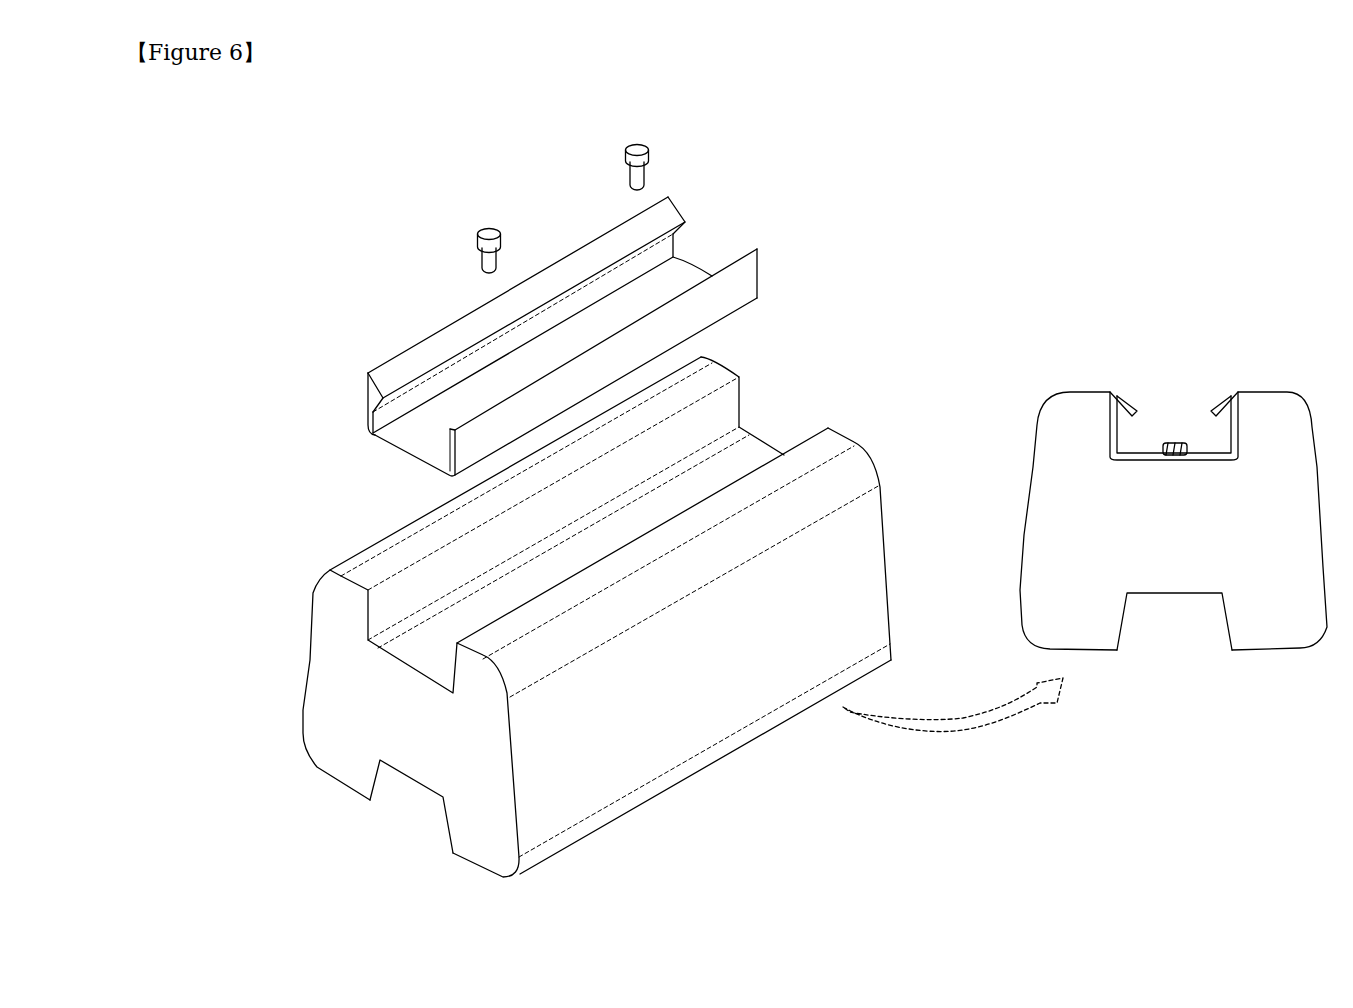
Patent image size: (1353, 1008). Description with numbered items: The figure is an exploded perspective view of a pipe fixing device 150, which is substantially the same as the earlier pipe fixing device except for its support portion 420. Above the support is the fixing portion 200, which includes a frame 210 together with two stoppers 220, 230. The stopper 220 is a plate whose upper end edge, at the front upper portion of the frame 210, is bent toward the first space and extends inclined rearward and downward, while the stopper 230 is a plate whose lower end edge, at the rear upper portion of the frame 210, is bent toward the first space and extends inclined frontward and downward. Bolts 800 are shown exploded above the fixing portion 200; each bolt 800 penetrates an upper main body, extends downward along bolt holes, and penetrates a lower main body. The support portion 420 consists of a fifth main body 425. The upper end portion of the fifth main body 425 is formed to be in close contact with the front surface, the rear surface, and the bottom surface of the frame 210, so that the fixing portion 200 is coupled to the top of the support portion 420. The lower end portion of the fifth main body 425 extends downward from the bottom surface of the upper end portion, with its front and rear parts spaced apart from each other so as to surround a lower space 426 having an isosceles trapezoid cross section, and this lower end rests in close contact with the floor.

The pipe fixing device 150 is at (318, 194).
The fixing portion 200 is at (270, 392).
The frame 210 is at (413, 435).
The stopper 220 is at (401, 370).
The stopper 230 is at (455, 429).
The support portion 420 is at (335, 668).
The fifth main body 425 is at (764, 625).
The lower space 426 is at (427, 807).
The bolt 800 is at (626, 150).